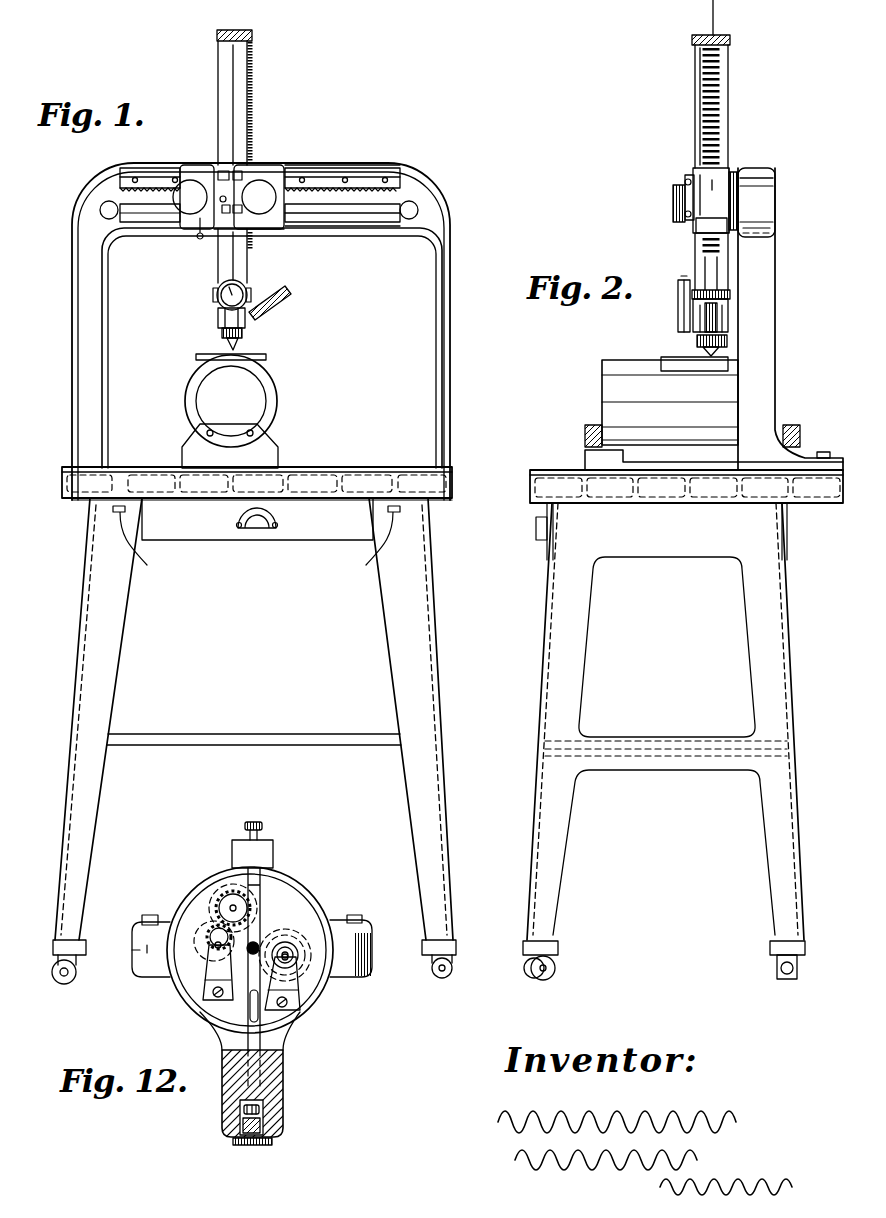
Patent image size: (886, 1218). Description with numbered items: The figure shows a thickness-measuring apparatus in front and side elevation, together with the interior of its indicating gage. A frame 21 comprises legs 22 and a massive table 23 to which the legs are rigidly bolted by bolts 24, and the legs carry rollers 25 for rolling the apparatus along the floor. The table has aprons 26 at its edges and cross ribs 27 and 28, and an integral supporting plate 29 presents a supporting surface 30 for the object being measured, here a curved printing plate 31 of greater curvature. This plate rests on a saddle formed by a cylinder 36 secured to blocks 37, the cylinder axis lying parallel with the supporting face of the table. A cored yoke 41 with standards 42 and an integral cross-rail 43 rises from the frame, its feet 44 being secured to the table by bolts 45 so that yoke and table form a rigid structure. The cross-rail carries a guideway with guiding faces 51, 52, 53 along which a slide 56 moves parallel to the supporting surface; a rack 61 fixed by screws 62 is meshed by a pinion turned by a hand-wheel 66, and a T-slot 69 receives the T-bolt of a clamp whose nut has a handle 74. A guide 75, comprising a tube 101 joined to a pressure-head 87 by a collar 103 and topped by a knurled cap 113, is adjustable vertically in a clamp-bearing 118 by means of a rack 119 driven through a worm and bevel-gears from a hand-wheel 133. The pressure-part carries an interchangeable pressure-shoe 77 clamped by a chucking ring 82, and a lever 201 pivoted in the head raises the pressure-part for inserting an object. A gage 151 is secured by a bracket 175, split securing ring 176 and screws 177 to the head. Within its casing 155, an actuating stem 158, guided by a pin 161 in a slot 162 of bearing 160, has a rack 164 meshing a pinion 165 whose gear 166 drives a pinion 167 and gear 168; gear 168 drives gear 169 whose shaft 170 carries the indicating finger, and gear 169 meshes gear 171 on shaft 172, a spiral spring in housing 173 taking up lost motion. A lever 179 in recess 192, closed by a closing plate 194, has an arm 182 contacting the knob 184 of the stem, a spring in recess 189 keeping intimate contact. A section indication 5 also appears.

In FIG. 2, the section line 5 is at (711, 378).
In FIG. 1, the frame 21 is at (74, 583).
In FIG. 2, the frame 21 is at (534, 586).
In FIG. 1, the legs 22 is at (98, 675).
In FIG. 2, the legs 22 is at (550, 793).
In FIG. 1, the table 23 is at (90, 492).
In FIG. 2, the table 23 is at (555, 480).
In FIG. 1, the bolts 24 is at (140, 552).
In FIG. 1, the rollers 25 is at (66, 983).
In FIG. 2, the rollers 25 is at (550, 980).
In FIG. 1, the aprons 26 is at (65, 487).
In FIG. 2, the aprons 26 is at (533, 490).
In FIG. 1, the cross rib 27 is at (172, 500).
In FIG. 2, the cross rib 28 is at (587, 492).
In FIG. 1, the supporting plate 29 is at (162, 475).
In FIG. 2, the supporting plate 29 is at (560, 475).
In FIG. 1, the supporting surface 30 is at (360, 439).
In FIG. 2, the supporting surface 30 is at (680, 470).
In FIG. 1, the curved printing plate 31 is at (262, 360).
In FIG. 2, the curved printing plate 31 is at (680, 364).
In FIG. 1, the cylinder 36 is at (270, 390).
In FIG. 2, the cylinder 36 is at (610, 380).
In FIG. 1, the blocks 37 is at (250, 452).
In FIG. 2, the blocks 37 is at (590, 426).
In FIG. 1, the yoke 41 is at (438, 174).
In FIG. 2, the yoke 41 is at (762, 166).
In FIG. 1, the standards 42 is at (92, 332).
In FIG. 2, the standards 42 is at (760, 323).
In FIG. 1, the cross-rail 43 is at (305, 167).
In FIG. 2, the cross-rail 43 is at (757, 203).
In FIG. 2, the feet 44 is at (800, 462).
In FIG. 2, the bolts 45 is at (823, 452).
In FIG. 1, the guiding face 51 is at (170, 168).
In FIG. 2, the guiding face 51 is at (738, 170).
In FIG. 1, the guiding face 52 is at (143, 168).
In FIG. 2, the guiding face 52 is at (752, 172).
In FIG. 1, the guiding face 53 is at (140, 222).
In FIG. 2, the guiding face 53 is at (742, 235).
In FIG. 1, the slide 56 is at (182, 165).
In FIG. 2, the slide 56 is at (739, 166).
In FIG. 1, the rack 61 is at (362, 184).
In FIG. 2, the rack 61 is at (750, 188).
In FIG. 1, the screws 62 is at (133, 180).
In FIG. 1, the hand-wheel 66 is at (192, 190).
In FIG. 1, the T-slot 69 is at (340, 210).
In FIG. 1, the handle 74 is at (199, 226).
In FIG. 1, the guide 75 is at (210, 72).
In FIG. 2, the guide 75 is at (738, 59).
In FIG. 1, the pressure-shoe 77 is at (228, 346).
In FIG. 2, the pressure-shoe 77 is at (706, 351).
In FIG. 1, the chucking ring 82 is at (244, 335).
In FIG. 2, the chucking ring 82 is at (729, 341).
In FIG. 1, the pressure-head 87 is at (216, 318).
In FIG. 2, the pressure-head 87 is at (730, 315).
In FIG. 1, the tube 101 is at (237, 50).
In FIG. 2, the tube 101 is at (700, 68).
In FIG. 2, the collar 103 is at (732, 294).
In FIG. 1, the top knob 113 is at (216, 32).
In FIG. 2, the top knob 113 is at (692, 40).
In FIG. 1, the clamp-bearing 118 is at (240, 218).
In FIG. 2, the clamp-bearing 118 is at (697, 226).
In FIG. 1, the rack 119 is at (252, 80).
In FIG. 2, the rack 119 is at (722, 80).
In FIG. 1, the hand-wheel 133 is at (262, 192).
In FIG. 2, the hand-wheel 133 is at (673, 205).
In FIG. 1, the gage 151 is at (248, 282).
In FIG. 2, the gage 151 is at (678, 294).
In FIG. 12, the gage 151 is at (300, 868).
In FIG. 12, the casing 155 is at (182, 905).
In FIG. 12, the actuating stem 158 is at (232, 860).
In FIG. 12, the bearing 160 is at (240, 1022).
In FIG. 12, the pin 161 is at (270, 1015).
In FIG. 12, the slot 162 is at (268, 1030).
In FIG. 12, the rack 164 is at (255, 918).
In FIG. 12, the pinion 165 is at (218, 920).
In FIG. 12, the gear 166 is at (225, 898).
In FIG. 12, the pinion 167 is at (210, 948).
In FIG. 12, the gear 168 is at (196, 957).
In FIG. 12, the gear 169 is at (257, 942).
In FIG. 12, the shaft 170 is at (277, 945).
In FIG. 12, the gear 171 is at (305, 945).
In FIG. 12, the shaft 172 is at (290, 963).
In FIG. 12, the housing 173 is at (298, 975).
In FIG. 12, the bracket 175 is at (270, 1082).
In FIG. 12, the split securing ring 176 is at (310, 885).
In FIG. 12, the screws 177 is at (142, 919).
In FIG. 12, the lever 179 is at (265, 1125).
In FIG. 12, the arm 182 is at (243, 1130).
In FIG. 12, the knob 184 is at (243, 1108).
In FIG. 12, the recess 189 is at (241, 853).
In FIG. 12, the recess 192 is at (248, 1144).
In FIG. 12, the closing plate 194 is at (265, 1144).
In FIG. 1, the lever 201 is at (290, 300).
In FIG. 2, the lever 201 is at (705, 316).